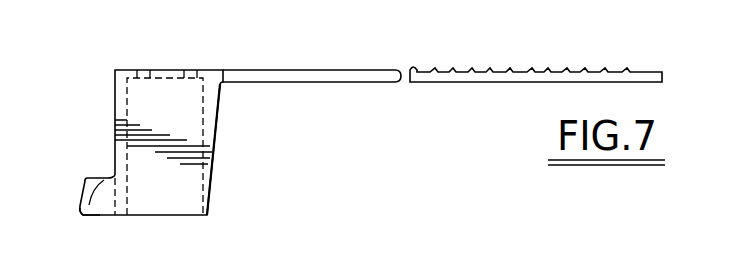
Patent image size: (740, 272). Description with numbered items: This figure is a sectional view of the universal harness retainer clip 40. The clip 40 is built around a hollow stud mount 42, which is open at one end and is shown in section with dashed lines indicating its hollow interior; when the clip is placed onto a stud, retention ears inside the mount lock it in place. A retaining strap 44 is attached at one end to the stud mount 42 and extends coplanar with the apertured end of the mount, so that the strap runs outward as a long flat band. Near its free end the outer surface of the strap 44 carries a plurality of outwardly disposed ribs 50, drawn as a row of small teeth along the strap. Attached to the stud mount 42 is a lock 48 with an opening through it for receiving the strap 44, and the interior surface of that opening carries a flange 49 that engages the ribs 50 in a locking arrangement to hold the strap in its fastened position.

The retainer clip 40 is at (300, 123).
The hollow stud mount 42 is at (130, 70).
The retaining strap 44 is at (378, 69).
The lock 48 is at (88, 213).
The flange 49 is at (100, 176).
The ribs 50 is at (529, 71).